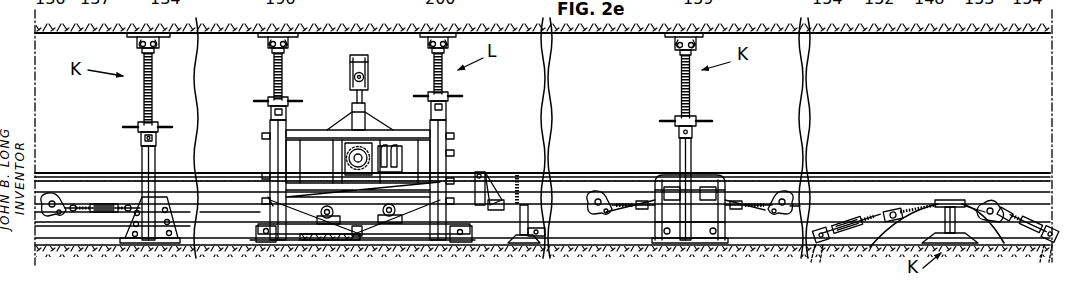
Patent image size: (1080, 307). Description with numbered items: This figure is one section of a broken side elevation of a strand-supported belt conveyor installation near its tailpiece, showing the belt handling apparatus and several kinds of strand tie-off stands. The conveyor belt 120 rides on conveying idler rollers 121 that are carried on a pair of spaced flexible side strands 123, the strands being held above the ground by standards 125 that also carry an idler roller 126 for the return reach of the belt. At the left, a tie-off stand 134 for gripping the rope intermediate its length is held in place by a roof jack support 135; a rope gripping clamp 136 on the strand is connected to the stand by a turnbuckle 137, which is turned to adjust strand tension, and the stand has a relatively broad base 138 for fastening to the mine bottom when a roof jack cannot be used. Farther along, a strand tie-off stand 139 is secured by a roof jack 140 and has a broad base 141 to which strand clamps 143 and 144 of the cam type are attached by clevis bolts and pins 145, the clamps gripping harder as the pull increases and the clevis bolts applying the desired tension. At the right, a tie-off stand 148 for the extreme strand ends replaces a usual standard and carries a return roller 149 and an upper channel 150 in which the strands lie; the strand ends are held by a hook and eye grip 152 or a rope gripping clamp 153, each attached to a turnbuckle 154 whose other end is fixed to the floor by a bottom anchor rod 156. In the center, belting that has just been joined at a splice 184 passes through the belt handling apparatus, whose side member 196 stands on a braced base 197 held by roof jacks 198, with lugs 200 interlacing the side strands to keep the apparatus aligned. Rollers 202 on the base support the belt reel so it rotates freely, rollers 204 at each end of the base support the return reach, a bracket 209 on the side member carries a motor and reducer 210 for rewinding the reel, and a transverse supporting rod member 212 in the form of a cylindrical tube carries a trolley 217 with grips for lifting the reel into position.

The belt 120 is at (206, 181).
The conveying idler rollers 121 is at (488, 165).
The flexible side strands 123 is at (217, 213).
The standards 125 is at (523, 238).
The idler roller 126 is at (553, 232).
The tie-off stand 134 is at (148, 168).
The roof jack support 135 is at (143, 97).
The rope gripping clamp 136 is at (50, 200).
The turnbuckle 137 is at (104, 204).
The base 138 is at (135, 242).
The strand tie-off stand 139 is at (690, 155).
The roof jack 140 is at (690, 100).
The base 141 is at (673, 240).
The strand clamp 143 is at (592, 193).
The strand clamp 144 is at (786, 190).
The clevis bolts and pins 145 is at (637, 200).
The tie-off stand 148 is at (915, 243).
The return roller 149 is at (962, 238).
The channel 150 is at (948, 207).
The hook and eye grip 152 is at (895, 212).
The rope gripping clamp 153 is at (997, 202).
The turnbuckle 154 is at (852, 220).
The bottom anchor rod 156 is at (812, 242).
The splice 184 is at (517, 172).
The side member 196 is at (442, 150).
The base 197 is at (388, 234).
The roof jacks 198 is at (270, 72).
The lugs 200 is at (280, 212).
The rollers 202 is at (333, 204).
The rollers 204 is at (262, 236).
The bracket 209 is at (413, 145).
The motor and reducer 210 is at (352, 148).
The supporting rod member 212 is at (366, 77).
The trolley 217 is at (366, 58).